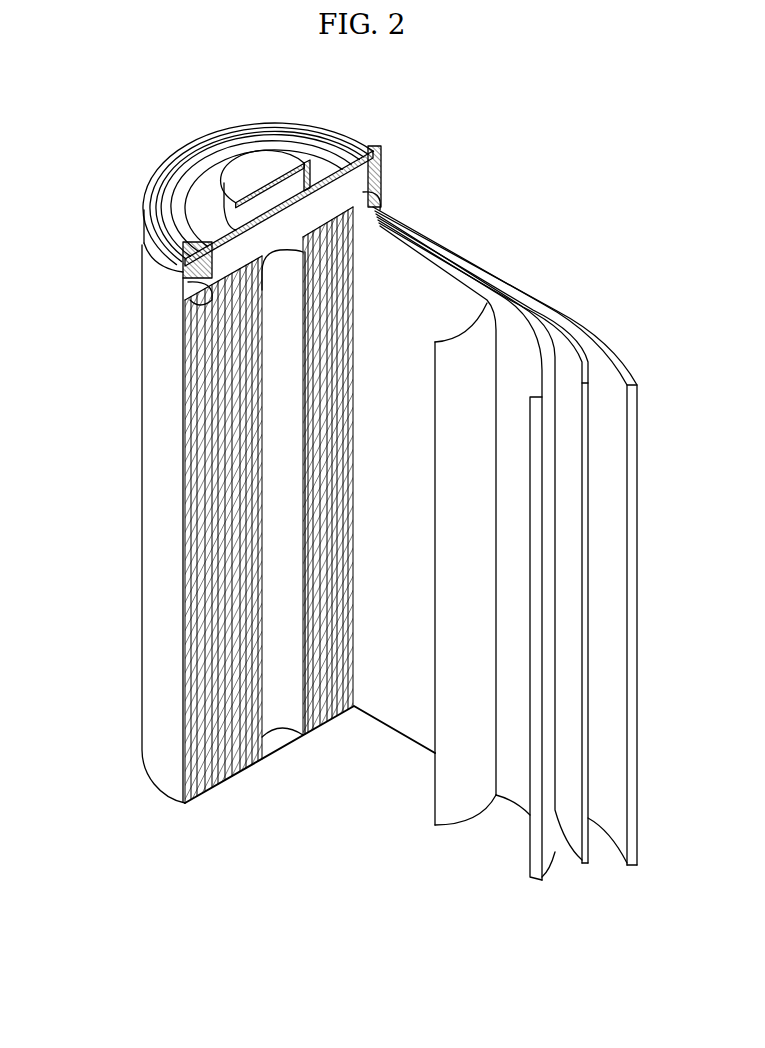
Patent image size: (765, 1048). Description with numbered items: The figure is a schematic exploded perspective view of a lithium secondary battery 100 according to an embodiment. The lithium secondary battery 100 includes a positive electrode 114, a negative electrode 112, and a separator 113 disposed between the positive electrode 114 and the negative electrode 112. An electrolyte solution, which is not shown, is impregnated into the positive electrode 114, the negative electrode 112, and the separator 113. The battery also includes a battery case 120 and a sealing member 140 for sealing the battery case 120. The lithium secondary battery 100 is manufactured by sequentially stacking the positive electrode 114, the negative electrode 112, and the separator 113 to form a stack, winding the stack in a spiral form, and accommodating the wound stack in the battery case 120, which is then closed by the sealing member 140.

The lithium secondary battery 100 is at (500, 160).
The negative electrode 112 is at (620, 360).
The separator 113 is at (430, 263).
The positive electrode 114 is at (510, 317).
The battery case 120 is at (143, 505).
The sealing member 140 is at (258, 162).